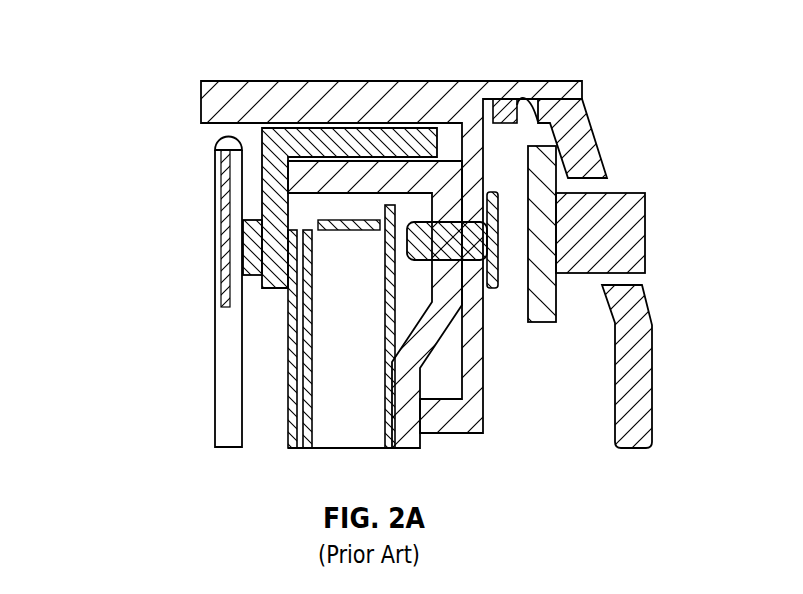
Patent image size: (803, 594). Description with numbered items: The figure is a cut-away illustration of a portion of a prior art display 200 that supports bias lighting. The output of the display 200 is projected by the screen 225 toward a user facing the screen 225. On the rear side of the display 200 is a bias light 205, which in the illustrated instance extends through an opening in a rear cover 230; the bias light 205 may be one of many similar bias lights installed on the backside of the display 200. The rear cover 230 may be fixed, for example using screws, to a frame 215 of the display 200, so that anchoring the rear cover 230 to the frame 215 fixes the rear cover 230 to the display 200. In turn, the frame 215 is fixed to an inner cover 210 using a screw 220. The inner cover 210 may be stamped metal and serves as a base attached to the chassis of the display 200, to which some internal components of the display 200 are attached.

The display 200 is at (112, 47).
The bias light 205 is at (643, 240).
The inner cover 210 is at (430, 331).
The frame 215 is at (362, 97).
The screw 220 is at (490, 288).
The screen 225 is at (215, 253).
The rear cover 230 is at (648, 395).